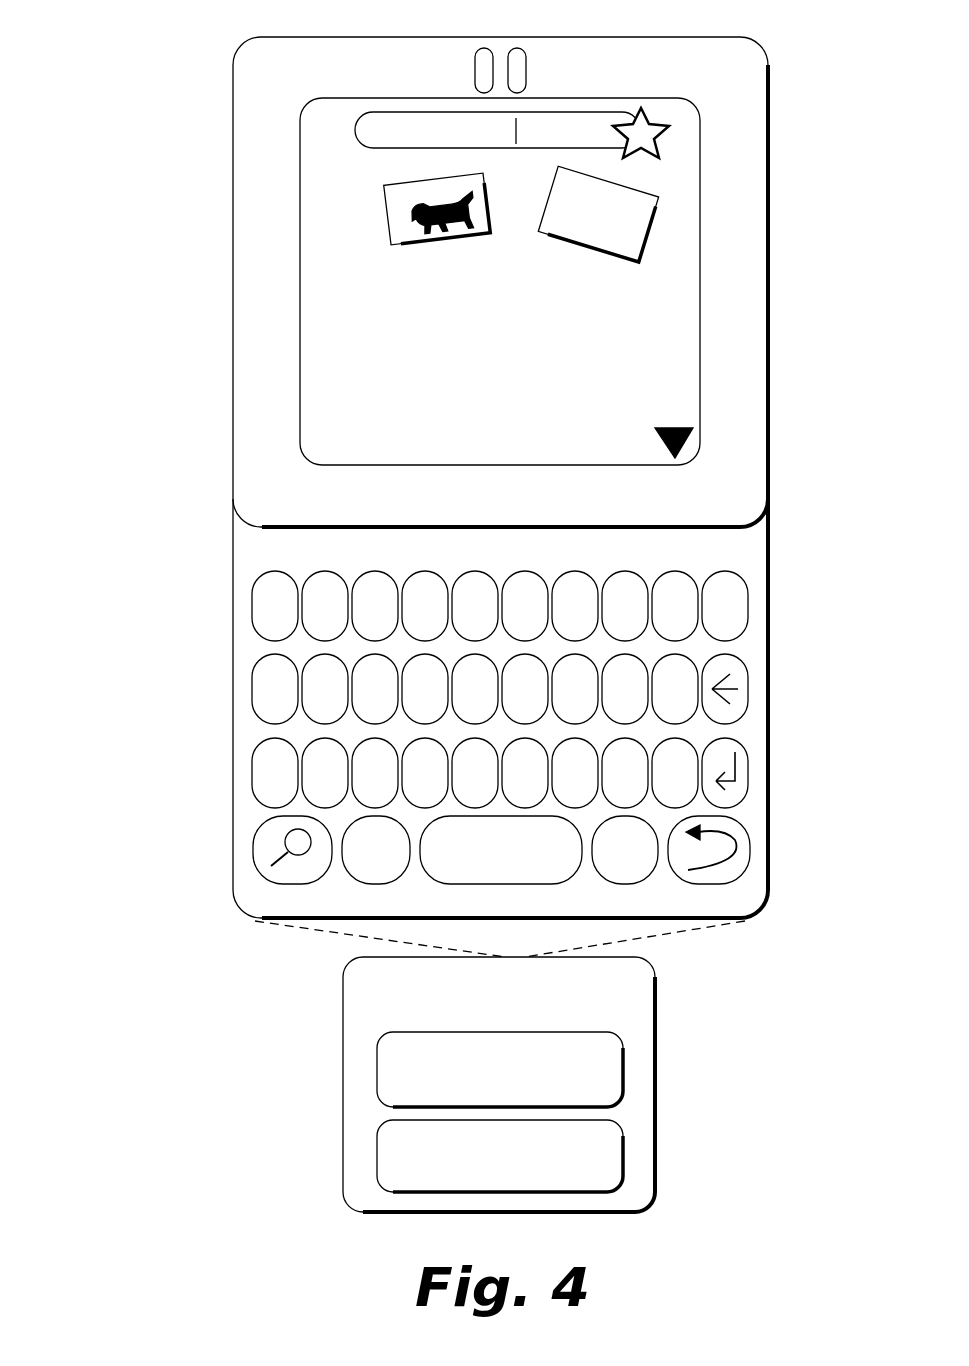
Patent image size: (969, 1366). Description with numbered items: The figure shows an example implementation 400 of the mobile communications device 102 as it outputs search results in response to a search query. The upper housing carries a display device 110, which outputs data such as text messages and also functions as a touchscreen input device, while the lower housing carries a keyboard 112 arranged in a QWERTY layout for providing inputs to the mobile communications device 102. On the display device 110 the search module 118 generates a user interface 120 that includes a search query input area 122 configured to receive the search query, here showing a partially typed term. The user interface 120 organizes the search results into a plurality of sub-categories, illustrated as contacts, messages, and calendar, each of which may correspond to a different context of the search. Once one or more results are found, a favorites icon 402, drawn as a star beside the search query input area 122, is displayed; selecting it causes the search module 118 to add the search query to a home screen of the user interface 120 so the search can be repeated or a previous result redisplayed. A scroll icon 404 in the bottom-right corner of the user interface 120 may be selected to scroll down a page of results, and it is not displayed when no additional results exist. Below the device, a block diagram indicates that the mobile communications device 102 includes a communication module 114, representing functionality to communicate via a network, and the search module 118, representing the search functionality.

The example implementation 400 is at (182, 66).
The display device 110 is at (527, 98).
The keyboard 112 is at (249, 553).
The user interface 120 is at (484, 302).
The search query input area 122 is at (414, 112).
The favorites icon 402 is at (632, 112).
The scroll icon 404 is at (693, 428).
The mobile communications device 102 is at (499, 1084).
The communication module 114 is at (500, 1069).
The search module 118 is at (500, 1156).